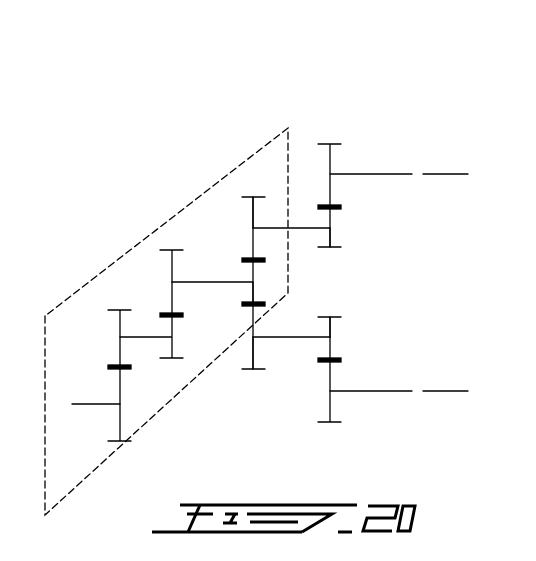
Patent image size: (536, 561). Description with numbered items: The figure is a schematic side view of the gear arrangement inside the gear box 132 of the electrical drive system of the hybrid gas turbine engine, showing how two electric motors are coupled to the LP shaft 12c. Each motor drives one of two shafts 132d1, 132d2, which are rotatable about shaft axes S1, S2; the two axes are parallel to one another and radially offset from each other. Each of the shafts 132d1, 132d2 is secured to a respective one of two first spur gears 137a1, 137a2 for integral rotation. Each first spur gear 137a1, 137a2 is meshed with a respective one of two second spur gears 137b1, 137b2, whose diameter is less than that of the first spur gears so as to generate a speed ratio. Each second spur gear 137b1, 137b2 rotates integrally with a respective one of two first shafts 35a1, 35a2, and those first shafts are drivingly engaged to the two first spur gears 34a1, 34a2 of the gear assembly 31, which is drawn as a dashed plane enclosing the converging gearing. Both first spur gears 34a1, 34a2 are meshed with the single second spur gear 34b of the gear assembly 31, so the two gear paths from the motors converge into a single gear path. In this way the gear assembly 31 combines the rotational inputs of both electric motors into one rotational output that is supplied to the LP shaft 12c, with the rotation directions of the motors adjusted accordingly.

The gear box 132 is at (425, 100).
The gear assembly 31 is at (118, 258).
The LP shaft 12c is at (90, 405).
The first spur gear of the gear assembly 34a1 is at (252, 210).
The first spur gear of the gear assembly 34a2 is at (248, 357).
The second spur gear of the gear assembly 34b is at (254, 289).
The first shaft 35a1 is at (303, 228).
The first shaft 35a2 is at (290, 338).
The first spur gear 137a1 is at (332, 152).
The first spur gear 137a2 is at (331, 380).
The second spur gear 137b1 is at (331, 237).
The second spur gear 137b2 is at (331, 327).
The shaft 132d1 is at (388, 173).
The shaft 132d2 is at (370, 392).
The shaft axis S1 is at (443, 175).
The shaft axis S2 is at (443, 392).